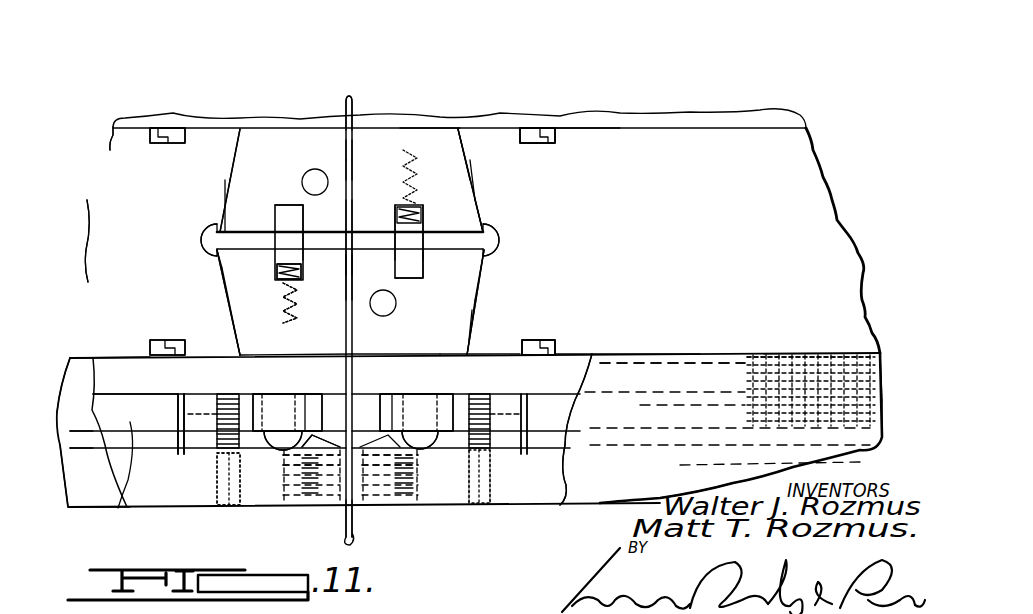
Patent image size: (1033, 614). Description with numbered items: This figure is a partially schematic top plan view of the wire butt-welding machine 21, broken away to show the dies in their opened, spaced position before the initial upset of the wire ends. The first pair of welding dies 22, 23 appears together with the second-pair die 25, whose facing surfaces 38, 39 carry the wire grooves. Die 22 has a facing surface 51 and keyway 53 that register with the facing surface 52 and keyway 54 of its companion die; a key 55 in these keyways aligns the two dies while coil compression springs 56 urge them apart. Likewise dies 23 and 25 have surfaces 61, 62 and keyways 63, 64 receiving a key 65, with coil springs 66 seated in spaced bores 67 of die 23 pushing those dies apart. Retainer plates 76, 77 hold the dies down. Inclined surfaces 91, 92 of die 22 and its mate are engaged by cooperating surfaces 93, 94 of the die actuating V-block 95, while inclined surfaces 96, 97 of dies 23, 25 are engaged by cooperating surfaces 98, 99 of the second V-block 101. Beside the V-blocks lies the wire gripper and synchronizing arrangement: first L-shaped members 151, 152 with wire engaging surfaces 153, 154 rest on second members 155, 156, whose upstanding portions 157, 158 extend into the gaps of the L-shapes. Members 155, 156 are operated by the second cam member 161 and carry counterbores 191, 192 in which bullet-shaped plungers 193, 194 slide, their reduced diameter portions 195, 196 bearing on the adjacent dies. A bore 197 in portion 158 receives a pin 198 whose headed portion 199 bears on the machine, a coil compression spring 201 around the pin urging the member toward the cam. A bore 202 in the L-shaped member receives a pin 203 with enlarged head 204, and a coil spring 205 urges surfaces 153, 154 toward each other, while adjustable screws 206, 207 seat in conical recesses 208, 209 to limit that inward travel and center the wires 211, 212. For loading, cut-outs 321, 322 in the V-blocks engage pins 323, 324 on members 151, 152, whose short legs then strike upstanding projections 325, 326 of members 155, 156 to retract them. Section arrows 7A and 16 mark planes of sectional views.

The machine 21 is at (329, 83).
The wire 211 is at (356, 104).
The bores 67 is at (428, 127).
The cooperating surface 98 is at (458, 130).
The inclined surface 96 is at (536, 130).
The pin 324 is at (605, 335).
The pin 323 is at (173, 340).
The recessed cut-out 321 is at (148, 342).
The inclined surface 91 is at (237, 156).
The cooperating surface 93 is at (235, 180).
The welding die 22 is at (216, 201).
The retainer plate 76 is at (346, 148).
The key 55 is at (293, 205).
The facing surface 51 is at (233, 232).
The keyway 53 is at (303, 223).
The retainer plate 77 is at (353, 170).
The key 65 is at (372, 218).
The keyway 63 is at (426, 217).
The coil spring 66 is at (483, 180).
The welding die 23 is at (483, 170).
The recessed cut-out 322 is at (558, 345).
The second die actuating V-block 101 is at (673, 223).
The surface 61 is at (480, 230).
The surface 62 is at (500, 243).
The keyway 64 is at (430, 263).
The cooperating surface 99 is at (472, 287).
The welding die 25 is at (466, 301).
The inclined surface 97 is at (473, 318).
The first generally L-shaped member 152 is at (462, 350).
The bore 202 is at (707, 342).
The pin 203 is at (771, 350).
The coil spring 205 is at (830, 345).
The enlarged head 204 is at (885, 365).
The headed portion 199 is at (885, 420).
The coil compression spring 201 is at (863, 452).
The bore 197 is at (740, 447).
The pin 198 is at (662, 450).
The second member 156 is at (578, 418).
The upstanding portion 158 is at (580, 470).
The bracket 16 is at (532, 430).
The conical recess 208 is at (182, 390).
The counterbore 191 is at (270, 375).
The wire engaging surface 153 is at (335, 383).
The counterbore 192 is at (447, 366).
The conical recess 209 is at (522, 368).
The bullet-shaped plunger member 194 is at (425, 450).
The second member 155 is at (111, 426).
The upstanding portion 157 is at (100, 510).
The adjustable screw 206 is at (213, 515).
The bullet-shaped plunger member 193 is at (278, 447).
The second cam member 161 is at (283, 490).
The upstanding projection 325 is at (287, 447).
The upstanding projection 326 is at (397, 447).
The adjustable screw 207 is at (505, 518).
The wire 212 is at (353, 538).
The wire engaging surface 154 is at (393, 340).
The reduced diameter portion 196 is at (410, 352).
The reduced diameter portion 195 is at (255, 340).
The cooperating surface 94 is at (238, 318).
The first generally L-shaped member 151 is at (110, 360).
The die actuating V-block 95 is at (153, 247).
The inclined surface 92 is at (222, 268).
The facing surface 52 is at (232, 250).
The lower housing 7A is at (235, 300).
The facing surface 38 is at (346, 263).
The facing surface 39 is at (352, 263).
The keyway 54 is at (301, 285).
The coil compression spring 56 is at (300, 313).